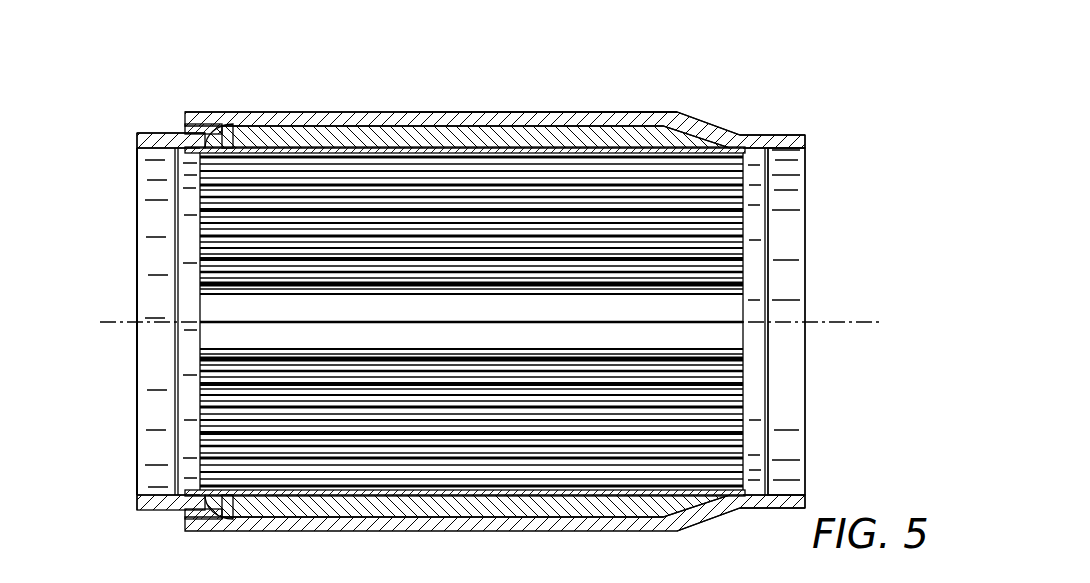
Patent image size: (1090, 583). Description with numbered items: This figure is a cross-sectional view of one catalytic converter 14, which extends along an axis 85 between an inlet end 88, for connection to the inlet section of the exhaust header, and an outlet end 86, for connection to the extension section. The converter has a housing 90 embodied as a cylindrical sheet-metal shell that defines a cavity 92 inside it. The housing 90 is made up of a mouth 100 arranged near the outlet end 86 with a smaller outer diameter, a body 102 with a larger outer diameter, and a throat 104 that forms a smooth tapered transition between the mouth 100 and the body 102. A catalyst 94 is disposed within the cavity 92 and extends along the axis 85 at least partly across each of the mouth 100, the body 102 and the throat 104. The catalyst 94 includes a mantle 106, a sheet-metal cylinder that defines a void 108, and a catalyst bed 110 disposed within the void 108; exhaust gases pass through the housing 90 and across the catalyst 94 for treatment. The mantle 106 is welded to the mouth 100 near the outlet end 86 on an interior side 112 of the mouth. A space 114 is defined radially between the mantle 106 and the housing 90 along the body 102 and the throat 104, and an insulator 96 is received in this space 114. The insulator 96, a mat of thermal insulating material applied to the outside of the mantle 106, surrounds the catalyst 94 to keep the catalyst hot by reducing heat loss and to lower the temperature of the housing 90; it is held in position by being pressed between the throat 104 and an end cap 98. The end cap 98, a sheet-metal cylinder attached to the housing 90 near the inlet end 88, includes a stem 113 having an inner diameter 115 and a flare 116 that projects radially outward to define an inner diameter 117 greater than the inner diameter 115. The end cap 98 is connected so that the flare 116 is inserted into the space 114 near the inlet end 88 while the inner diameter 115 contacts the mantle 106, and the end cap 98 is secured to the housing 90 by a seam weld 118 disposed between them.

The catalytic converter 14 is at (536, 78).
The axis 85 is at (861, 336).
The outlet end 86 is at (836, 103).
The inlet end 88 is at (84, 151).
The housing 90 is at (374, 92).
The cavity 92 is at (127, 172).
The catalyst 94 is at (755, 462).
The insulator 96 is at (412, 124).
The end cap 98 is at (147, 129).
The mouth 100 is at (776, 122).
The body 102 is at (634, 108).
The throat 104 is at (723, 116).
The mantle 106 is at (755, 164).
The void 108 is at (755, 305).
The catalyst bed 110 is at (720, 220).
The interior side 112 is at (780, 156).
The stem 113 is at (170, 129).
The space 114 is at (303, 134).
The inner diameter 115 is at (155, 154).
The flare 116 is at (212, 126).
The inner diameter 117 is at (220, 136).
The seam weld 118 is at (184, 515).